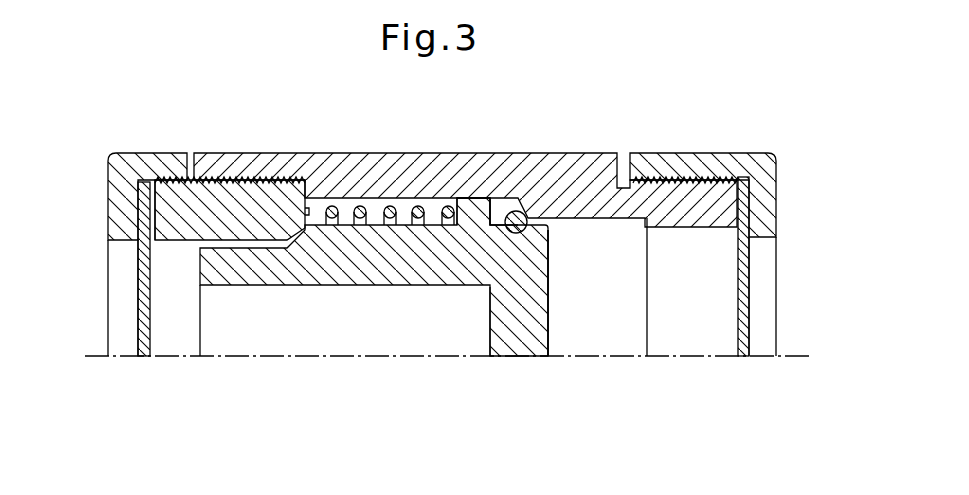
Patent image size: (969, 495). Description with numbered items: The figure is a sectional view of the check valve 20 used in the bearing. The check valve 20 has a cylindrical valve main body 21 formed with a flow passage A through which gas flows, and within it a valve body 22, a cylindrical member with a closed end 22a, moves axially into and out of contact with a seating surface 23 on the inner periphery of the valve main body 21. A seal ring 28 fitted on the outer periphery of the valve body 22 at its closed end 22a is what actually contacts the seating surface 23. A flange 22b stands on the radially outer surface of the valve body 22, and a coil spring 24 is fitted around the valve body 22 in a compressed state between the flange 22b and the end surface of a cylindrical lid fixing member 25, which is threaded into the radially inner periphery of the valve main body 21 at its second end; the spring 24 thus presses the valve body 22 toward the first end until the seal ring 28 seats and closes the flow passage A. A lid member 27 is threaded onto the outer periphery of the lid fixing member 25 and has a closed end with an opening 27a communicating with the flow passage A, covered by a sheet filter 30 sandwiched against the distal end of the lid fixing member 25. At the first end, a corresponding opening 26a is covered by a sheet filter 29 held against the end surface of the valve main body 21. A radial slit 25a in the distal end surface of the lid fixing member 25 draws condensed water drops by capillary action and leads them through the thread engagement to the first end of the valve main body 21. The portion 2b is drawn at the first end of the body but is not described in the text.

The check valve 20 is at (130, 150).
The valve main body 21 is at (325, 170).
The valve body 22 is at (378, 263).
The closed end 22a is at (523, 315).
The flange 22b is at (470, 200).
The seating surface 23 is at (529, 210).
The coil spring 24 is at (360, 207).
The lid fixing member 25 is at (232, 205).
The radial slit 25a is at (153, 208).
The opening 26a is at (760, 240).
The lid member 27 is at (125, 183).
The opening 27a is at (128, 243).
The seal ring 28 is at (505, 199).
The filter 29 is at (742, 293).
The filter 30 is at (145, 312).
The housing portion 2b is at (688, 165).
The flow passage A is at (600, 302).